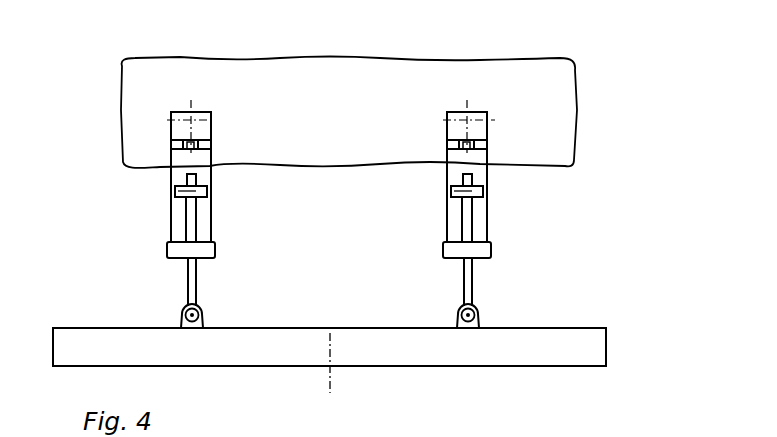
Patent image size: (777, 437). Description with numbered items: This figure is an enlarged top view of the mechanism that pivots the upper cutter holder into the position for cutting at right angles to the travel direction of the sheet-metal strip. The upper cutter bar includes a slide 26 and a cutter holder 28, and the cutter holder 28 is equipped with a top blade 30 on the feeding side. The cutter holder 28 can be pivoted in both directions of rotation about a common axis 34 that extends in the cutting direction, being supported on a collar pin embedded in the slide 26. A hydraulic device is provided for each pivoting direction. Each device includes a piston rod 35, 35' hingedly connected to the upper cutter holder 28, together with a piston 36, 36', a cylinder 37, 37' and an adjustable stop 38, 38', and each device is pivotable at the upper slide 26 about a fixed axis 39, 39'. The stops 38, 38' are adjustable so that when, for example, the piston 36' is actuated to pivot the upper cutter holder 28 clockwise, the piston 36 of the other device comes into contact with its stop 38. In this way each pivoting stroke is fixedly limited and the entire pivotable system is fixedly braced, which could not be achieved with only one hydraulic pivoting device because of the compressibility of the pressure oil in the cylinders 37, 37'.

The slide 26 is at (418, 82).
The cutter holder 28 is at (329, 371).
The top blade 30 is at (517, 348).
The common axis 34 is at (330, 365).
The piston rod 35 is at (123, 262).
The piston 36 is at (125, 181).
The cylinder 37 is at (129, 179).
The adjustable stop 38 is at (127, 138).
The fixed axis 39 is at (127, 97).
The piston rod 35' is at (562, 262).
The piston 36' is at (559, 180).
The cylinder 37' is at (555, 179).
The adjustable stop 38' is at (557, 136).
The fixed axis 39' is at (557, 96).